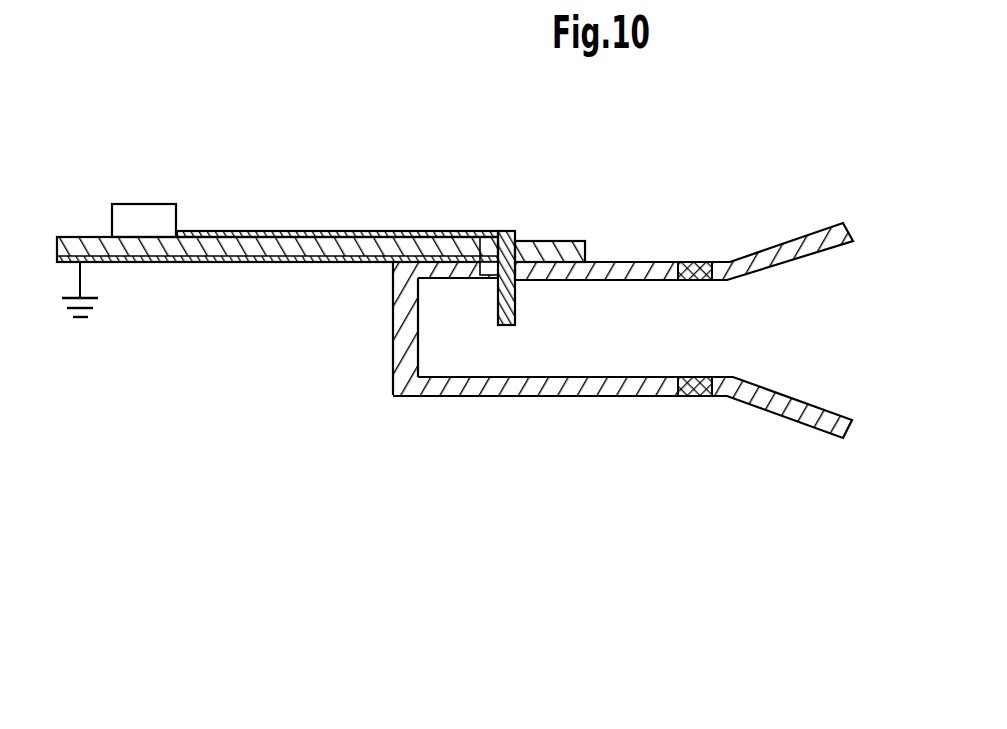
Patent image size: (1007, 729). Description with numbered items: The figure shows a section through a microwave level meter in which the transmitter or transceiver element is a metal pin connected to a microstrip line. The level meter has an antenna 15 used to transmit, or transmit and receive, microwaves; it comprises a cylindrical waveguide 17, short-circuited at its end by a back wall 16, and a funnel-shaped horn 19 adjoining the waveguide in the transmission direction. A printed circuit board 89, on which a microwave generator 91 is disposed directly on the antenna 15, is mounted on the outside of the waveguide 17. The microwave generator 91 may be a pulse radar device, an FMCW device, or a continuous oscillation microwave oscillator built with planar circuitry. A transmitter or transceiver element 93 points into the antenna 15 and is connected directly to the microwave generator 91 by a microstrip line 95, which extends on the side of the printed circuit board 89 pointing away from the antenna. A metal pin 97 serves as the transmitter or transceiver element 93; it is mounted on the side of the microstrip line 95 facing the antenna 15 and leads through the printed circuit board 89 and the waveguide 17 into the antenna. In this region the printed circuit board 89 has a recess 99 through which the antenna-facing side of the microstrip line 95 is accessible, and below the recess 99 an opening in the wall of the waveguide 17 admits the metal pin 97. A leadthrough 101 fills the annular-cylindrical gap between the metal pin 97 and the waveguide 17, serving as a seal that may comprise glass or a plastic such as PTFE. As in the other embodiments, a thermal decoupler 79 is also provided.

The antenna 15 is at (582, 360).
The back wall 16 is at (393, 338).
The cylindrical waveguide 17 is at (515, 396).
The funnel-shaped horn 19 is at (772, 244).
The thermal decoupler 79 is at (685, 396).
The printed circuit board 89 is at (163, 250).
The microwave generator 91 is at (132, 204).
The transmitter or transceiver element 93 is at (450, 212).
The microstrip line 95 is at (299, 231).
The metal pin 97 is at (515, 318).
The recess 99 is at (524, 237).
The leadthrough 101 is at (497, 277).